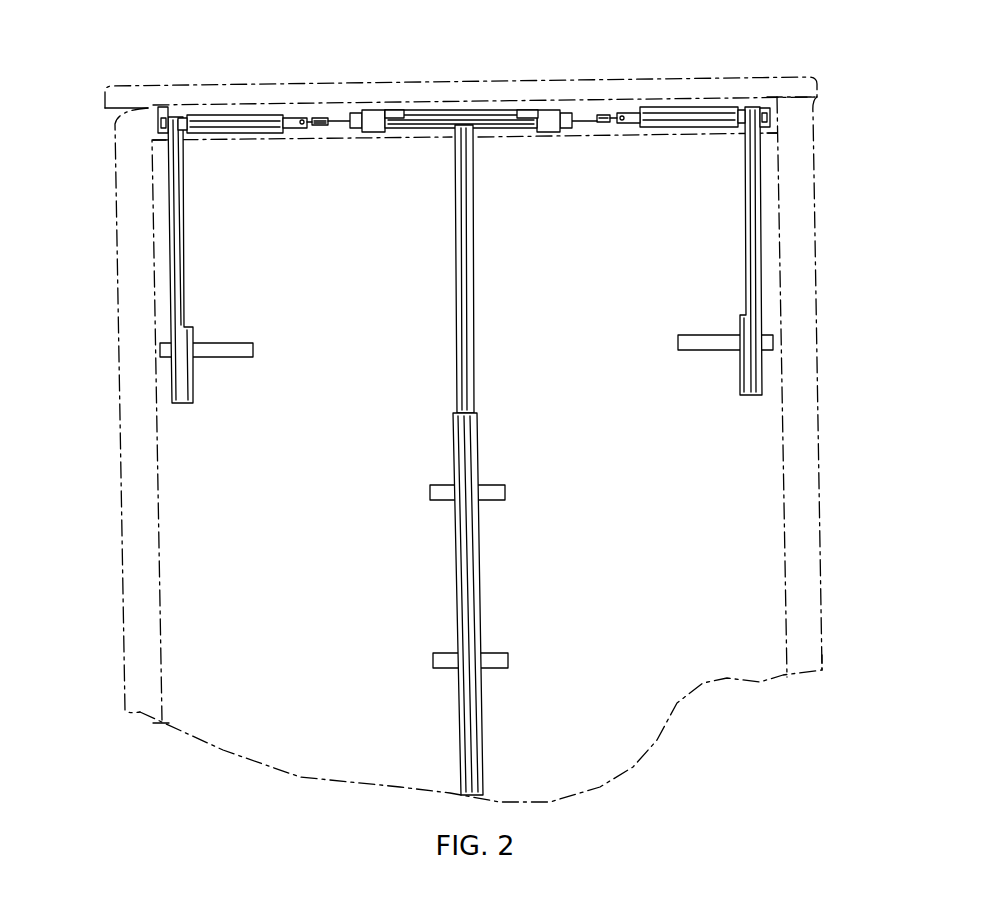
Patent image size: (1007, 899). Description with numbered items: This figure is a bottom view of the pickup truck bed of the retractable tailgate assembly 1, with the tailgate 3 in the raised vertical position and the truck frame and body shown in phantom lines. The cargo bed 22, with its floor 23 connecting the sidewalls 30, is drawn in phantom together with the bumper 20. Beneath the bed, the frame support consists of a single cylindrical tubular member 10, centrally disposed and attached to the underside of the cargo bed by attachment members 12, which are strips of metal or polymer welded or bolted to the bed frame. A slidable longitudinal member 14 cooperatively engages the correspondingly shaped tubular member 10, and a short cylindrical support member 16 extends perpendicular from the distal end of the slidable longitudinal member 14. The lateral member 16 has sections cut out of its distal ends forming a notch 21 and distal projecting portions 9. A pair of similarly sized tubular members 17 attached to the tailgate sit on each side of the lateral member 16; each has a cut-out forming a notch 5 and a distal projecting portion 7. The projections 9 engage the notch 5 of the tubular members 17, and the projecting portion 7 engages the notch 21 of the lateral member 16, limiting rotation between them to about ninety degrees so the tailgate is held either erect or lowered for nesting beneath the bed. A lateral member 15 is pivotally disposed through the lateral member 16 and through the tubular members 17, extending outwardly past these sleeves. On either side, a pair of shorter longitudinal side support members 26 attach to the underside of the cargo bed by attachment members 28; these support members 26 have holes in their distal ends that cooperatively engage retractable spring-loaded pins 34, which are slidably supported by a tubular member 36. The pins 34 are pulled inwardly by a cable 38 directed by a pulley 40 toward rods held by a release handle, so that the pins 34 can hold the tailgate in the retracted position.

The retractable tailgate assembly 1 is at (96, 93).
The tailgate 3 is at (790, 80).
The notch 5 is at (545, 112).
The distal projecting portion 7 is at (537, 108).
The distal projecting portions 9 is at (403, 124).
The tubular member 10 is at (465, 550).
The attachment members 12 is at (442, 488).
The slidable longitudinal member 14 is at (455, 258).
The lateral member 15 is at (357, 129).
The short support member 16 is at (503, 110).
The tubular members 17 is at (370, 133).
The bumper 20 is at (307, 101).
The notch 21 is at (383, 110).
The cargo bed 22 is at (273, 100).
The floor 23 is at (393, 115).
The longitudinal side support members 26 is at (180, 242).
The attachment members 28 is at (227, 354).
The sidewalls 30 is at (132, 405).
The spring-loaded pins 34 is at (160, 116).
The tubular member 36 is at (243, 130).
The cable 38 is at (338, 122).
The pulley 40 is at (320, 125).